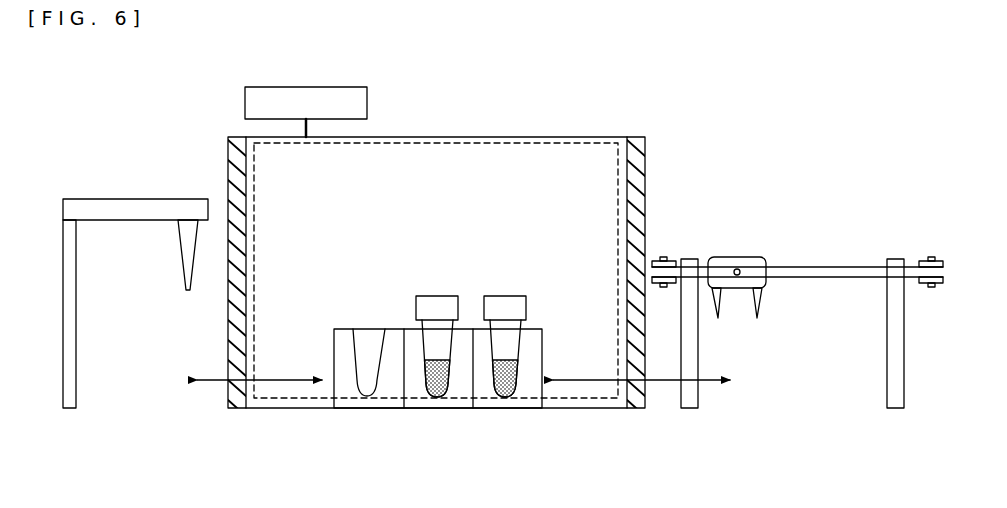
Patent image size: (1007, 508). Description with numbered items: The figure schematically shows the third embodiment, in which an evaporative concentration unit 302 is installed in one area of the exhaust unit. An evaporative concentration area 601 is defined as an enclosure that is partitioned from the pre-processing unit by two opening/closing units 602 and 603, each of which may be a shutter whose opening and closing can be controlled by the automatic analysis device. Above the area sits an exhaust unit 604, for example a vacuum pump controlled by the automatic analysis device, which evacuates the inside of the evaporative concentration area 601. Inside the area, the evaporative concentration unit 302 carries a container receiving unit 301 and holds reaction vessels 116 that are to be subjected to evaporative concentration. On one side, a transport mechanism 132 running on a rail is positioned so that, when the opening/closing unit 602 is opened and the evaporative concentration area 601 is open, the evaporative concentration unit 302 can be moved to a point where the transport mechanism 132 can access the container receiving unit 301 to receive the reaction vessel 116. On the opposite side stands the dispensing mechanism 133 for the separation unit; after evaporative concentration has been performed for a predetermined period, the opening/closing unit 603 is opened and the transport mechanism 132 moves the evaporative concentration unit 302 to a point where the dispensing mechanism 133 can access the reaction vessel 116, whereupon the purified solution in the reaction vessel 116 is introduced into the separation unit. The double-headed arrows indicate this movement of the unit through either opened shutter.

The evaporative concentration area 601 is at (540, 155).
The opening/closing unit 602 is at (635, 136).
The opening/closing unit 603 is at (229, 136).
The exhaust unit 604 is at (303, 87).
The dispensing mechanism for the separation unit 133 is at (185, 198).
The transport mechanism 132 is at (737, 257).
The reaction vessel 116 is at (505, 296).
The container receiving unit 301 is at (370, 328).
The evaporative concentration unit 302 is at (333, 338).